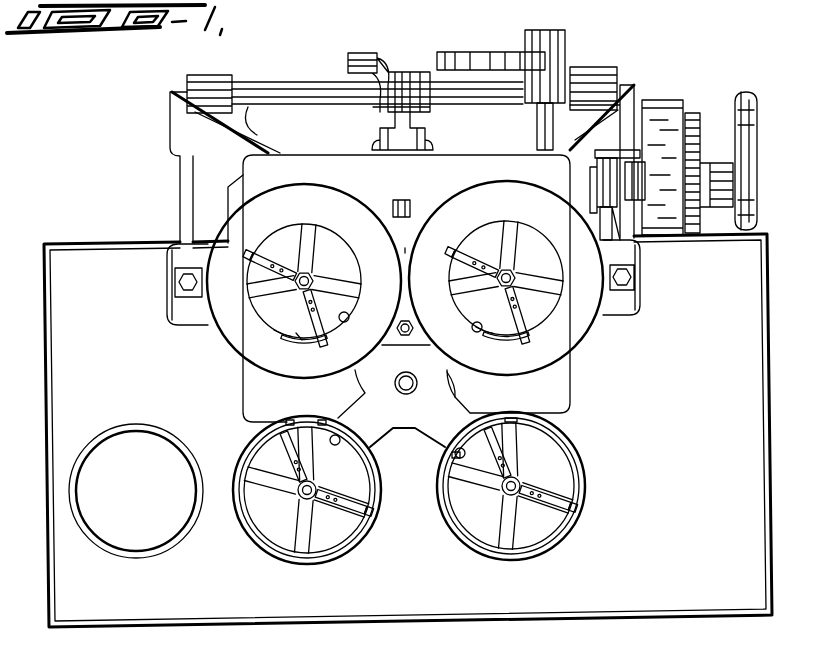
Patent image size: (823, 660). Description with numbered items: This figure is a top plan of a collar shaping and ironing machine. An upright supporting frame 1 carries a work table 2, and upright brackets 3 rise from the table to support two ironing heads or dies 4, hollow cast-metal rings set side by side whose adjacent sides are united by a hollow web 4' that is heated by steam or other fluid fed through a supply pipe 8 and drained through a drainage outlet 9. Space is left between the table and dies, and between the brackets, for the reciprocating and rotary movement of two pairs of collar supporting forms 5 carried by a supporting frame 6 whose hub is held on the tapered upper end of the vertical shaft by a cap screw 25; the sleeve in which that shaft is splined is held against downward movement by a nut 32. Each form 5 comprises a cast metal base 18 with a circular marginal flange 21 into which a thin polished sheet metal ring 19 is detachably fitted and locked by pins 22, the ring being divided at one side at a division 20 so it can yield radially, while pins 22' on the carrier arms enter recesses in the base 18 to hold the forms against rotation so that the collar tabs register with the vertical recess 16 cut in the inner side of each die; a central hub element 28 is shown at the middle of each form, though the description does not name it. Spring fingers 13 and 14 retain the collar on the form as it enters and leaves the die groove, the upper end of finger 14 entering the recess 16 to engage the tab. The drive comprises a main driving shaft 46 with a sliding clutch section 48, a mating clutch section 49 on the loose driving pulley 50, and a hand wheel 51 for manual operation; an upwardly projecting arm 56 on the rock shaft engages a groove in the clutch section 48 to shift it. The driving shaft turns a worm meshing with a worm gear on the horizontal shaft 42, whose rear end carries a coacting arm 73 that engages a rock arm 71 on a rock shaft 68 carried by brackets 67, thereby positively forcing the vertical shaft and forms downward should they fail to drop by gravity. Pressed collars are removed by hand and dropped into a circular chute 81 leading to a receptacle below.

The upright supporting frame 1 is at (245, 165).
The work table 2 is at (210, 240).
The upright brackets 3 is at (168, 303).
The ironing heads or dies 4 is at (399, 279).
The hollow web 4' is at (403, 237).
The collar supporting forms 5 is at (242, 475).
The supporting frame 6 is at (432, 420).
The supply pipe 8 is at (405, 337).
The drainage outlet 9 is at (402, 200).
The spring finger 13 is at (535, 510).
The spring finger 14 is at (340, 322).
The vertical recess 16 is at (305, 352).
The cast metal base 18 is at (308, 245).
The sheet metal ring 19 is at (283, 353).
The division 20 is at (296, 333).
The circular marginal flange 21 is at (445, 528).
The pins 22 is at (306, 406).
The pins 22' is at (435, 469).
The cap screw 25 is at (400, 393).
The hub 28 is at (312, 276).
The nut 32 is at (452, 387).
The shaft 42 is at (420, 120).
The main driving shaft 46 is at (645, 235).
The clutch section 48 is at (607, 168).
The clutch section 49 is at (640, 180).
The driving pulley 50 is at (660, 100).
The hand wheel 51 is at (746, 92).
The upwardly projecting arm 56 is at (597, 156).
The brackets 67 is at (592, 67).
The rock shaft 68 is at (537, 122).
The rock arm 71 is at (480, 55).
The coacting arm 73 is at (348, 63).
The circular chute 81 is at (138, 430).